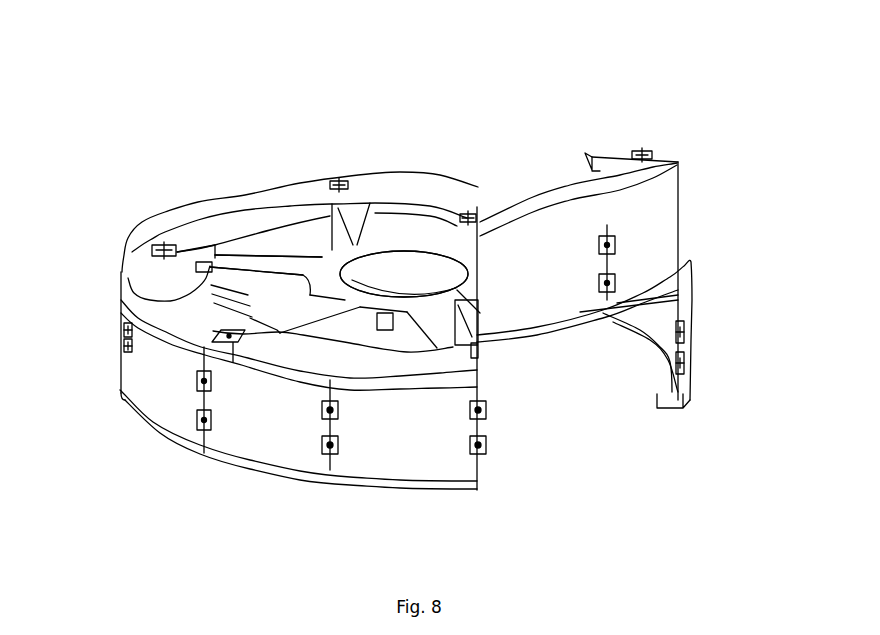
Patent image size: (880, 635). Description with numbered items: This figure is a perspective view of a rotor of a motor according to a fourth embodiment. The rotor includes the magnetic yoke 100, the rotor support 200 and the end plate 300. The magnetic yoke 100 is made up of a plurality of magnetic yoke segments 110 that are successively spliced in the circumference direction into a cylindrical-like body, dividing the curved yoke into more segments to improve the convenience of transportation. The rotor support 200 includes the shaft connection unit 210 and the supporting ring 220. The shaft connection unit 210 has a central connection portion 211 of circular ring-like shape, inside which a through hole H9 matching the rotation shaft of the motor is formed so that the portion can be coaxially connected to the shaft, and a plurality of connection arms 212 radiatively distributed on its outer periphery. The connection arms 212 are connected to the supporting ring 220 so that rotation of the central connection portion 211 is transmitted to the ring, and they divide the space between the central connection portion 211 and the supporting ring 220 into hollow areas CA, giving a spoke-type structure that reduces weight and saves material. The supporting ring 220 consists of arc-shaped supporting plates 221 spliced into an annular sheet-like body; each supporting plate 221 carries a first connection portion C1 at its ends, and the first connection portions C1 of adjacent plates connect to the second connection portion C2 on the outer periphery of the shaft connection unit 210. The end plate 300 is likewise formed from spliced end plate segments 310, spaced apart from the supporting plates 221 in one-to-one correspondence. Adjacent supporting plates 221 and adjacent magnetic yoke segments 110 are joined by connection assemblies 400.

The magnetic yoke 100 is at (153, 365).
The magnetic yoke segment 110 is at (650, 250).
The rotor support 200 is at (240, 62).
The shaft connection unit 210 is at (460, 100).
The central connection portion 211 is at (408, 292).
The connection arm 212 is at (372, 215).
The supporting ring 220 is at (278, 206).
The supporting plate 221 is at (650, 177).
The end plate 300 is at (136, 413).
The end plate segment 310 is at (653, 293).
The connection assembly 400 is at (232, 345).
The first connection portion C1 is at (190, 243).
The second connection portion C2 is at (128, 292).
The hollow area CA is at (275, 246).
The through hole H9 is at (450, 268).